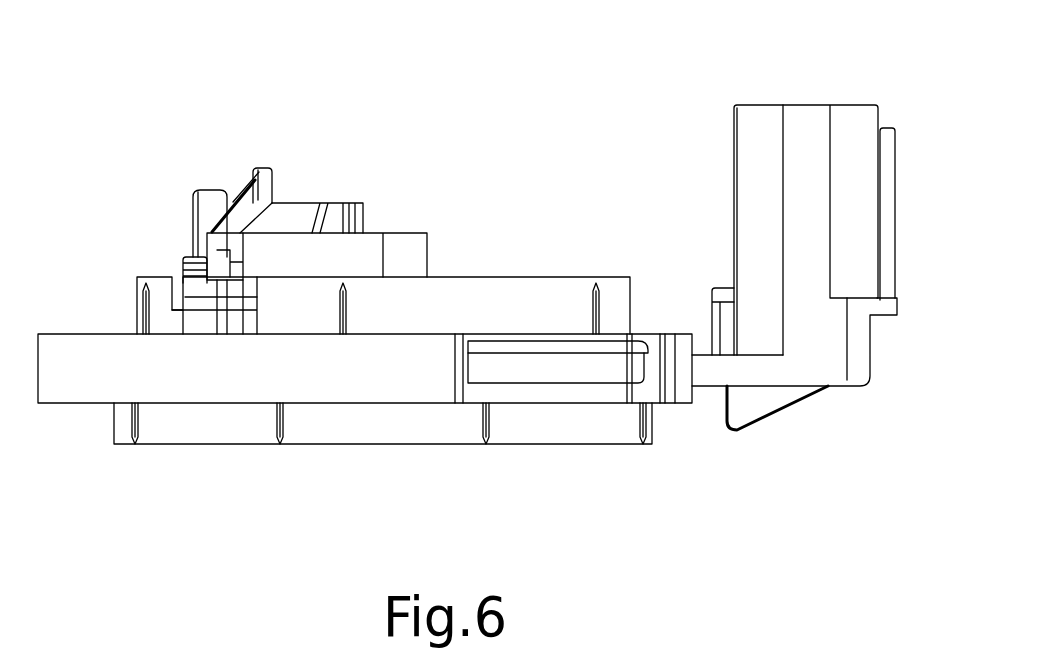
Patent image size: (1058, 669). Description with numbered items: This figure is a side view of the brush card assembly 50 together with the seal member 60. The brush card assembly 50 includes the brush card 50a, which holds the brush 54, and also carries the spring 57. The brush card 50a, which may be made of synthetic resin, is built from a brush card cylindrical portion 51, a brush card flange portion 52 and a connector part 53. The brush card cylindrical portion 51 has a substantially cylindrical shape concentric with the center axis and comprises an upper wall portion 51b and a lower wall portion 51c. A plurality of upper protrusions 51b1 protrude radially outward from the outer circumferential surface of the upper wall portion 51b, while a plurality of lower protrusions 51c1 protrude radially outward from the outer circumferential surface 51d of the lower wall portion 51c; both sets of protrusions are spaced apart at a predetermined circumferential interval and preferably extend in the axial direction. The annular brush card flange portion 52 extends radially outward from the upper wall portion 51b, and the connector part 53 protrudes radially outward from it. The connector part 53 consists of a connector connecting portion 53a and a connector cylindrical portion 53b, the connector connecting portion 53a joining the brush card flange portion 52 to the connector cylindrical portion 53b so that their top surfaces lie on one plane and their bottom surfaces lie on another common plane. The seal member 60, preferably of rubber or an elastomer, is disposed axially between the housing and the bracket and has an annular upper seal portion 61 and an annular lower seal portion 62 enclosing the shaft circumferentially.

The brush card assembly 50 is at (576, 97).
The brush card 50a is at (403, 234).
The brush card cylindrical portion 51 is at (372, 328).
The upper wall portion 51b is at (525, 297).
The upper protrusions 51b1 is at (150, 307).
The lower wall portion 51c is at (222, 425).
The lower protrusions 51c1 is at (139, 420).
The outer circumferential surface 51d is at (394, 432).
The brush card flange portion 52 is at (565, 372).
The connector part 53 is at (858, 483).
The connector connecting portion 53a is at (709, 372).
The connector cylindrical portion 53b is at (822, 323).
The brush 54 is at (238, 260).
The spring 57 is at (184, 262).
The seal member 60 is at (648, 330).
The upper seal portion 61 is at (662, 333).
The lower seal portion 62 is at (612, 404).